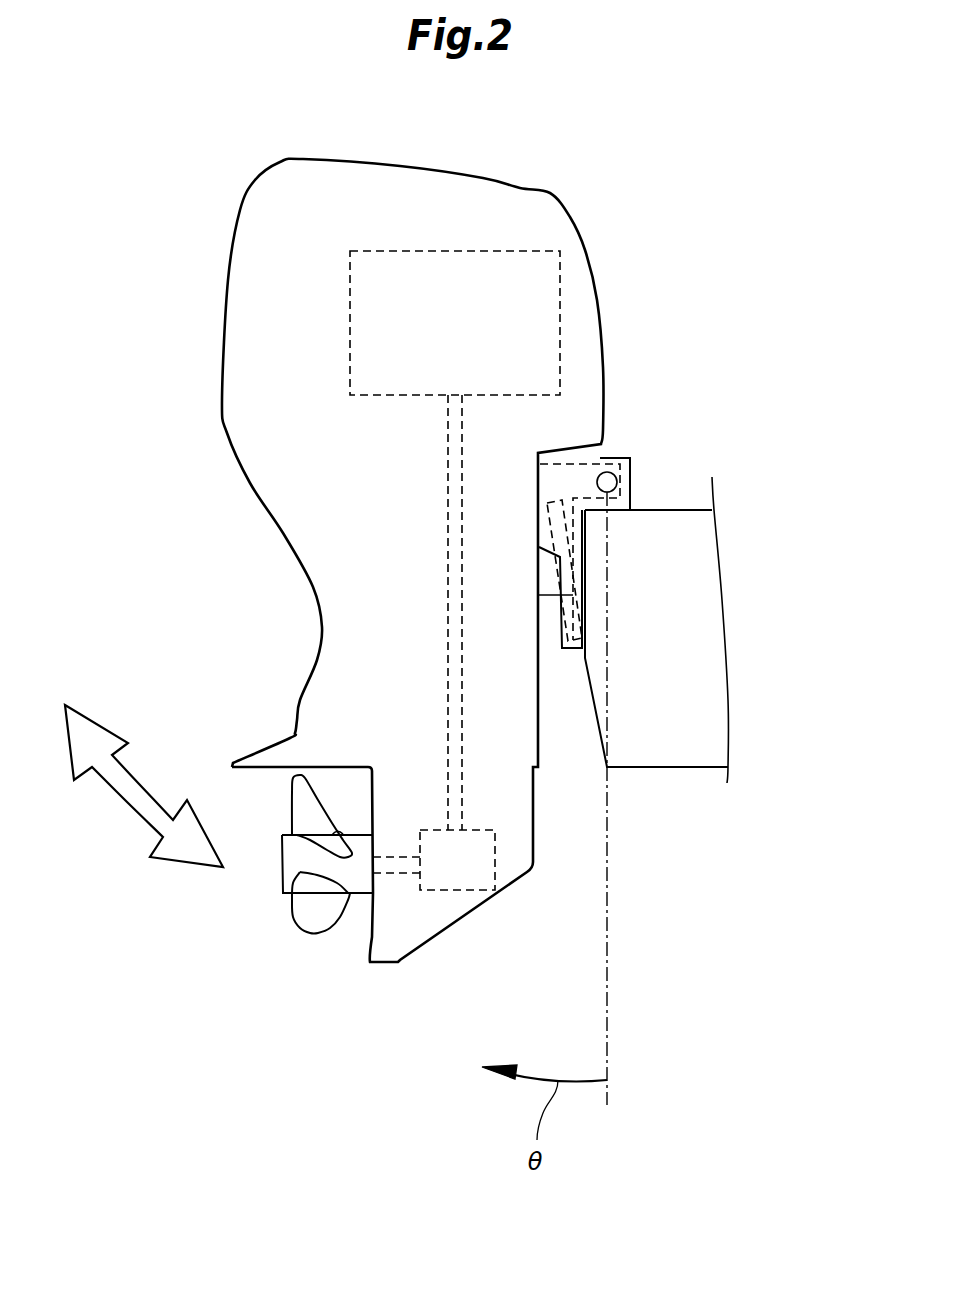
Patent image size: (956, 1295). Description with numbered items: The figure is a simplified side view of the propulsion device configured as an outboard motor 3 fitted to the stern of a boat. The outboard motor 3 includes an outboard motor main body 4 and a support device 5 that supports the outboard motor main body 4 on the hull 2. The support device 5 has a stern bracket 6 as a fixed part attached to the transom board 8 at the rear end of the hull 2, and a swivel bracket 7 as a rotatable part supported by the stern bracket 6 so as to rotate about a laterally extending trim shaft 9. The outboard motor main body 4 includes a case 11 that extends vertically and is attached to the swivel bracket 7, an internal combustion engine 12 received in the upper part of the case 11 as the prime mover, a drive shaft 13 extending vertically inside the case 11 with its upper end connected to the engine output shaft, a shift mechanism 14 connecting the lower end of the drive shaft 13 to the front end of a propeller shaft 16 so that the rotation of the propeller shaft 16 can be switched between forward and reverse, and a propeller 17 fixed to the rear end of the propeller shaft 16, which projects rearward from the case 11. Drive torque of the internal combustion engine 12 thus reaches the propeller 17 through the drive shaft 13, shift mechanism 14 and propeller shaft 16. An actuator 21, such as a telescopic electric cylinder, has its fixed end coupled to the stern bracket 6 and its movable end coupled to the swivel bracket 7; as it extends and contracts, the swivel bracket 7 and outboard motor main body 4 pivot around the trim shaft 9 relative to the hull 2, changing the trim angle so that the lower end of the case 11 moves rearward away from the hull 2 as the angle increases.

The hull 2 is at (667, 753).
The outboard motor 3 is at (639, 197).
The outboard motor main body 4 is at (252, 168).
The support device 5 is at (637, 453).
The stern bracket 6 is at (628, 498).
The swivel bracket 7 is at (558, 468).
The transom board 8 is at (693, 512).
The trim shaft 9 is at (610, 473).
The case 11 is at (330, 168).
The internal combustion engine 12 is at (520, 250).
The drive shaft 13 is at (448, 463).
The shift mechanism 14 is at (465, 882).
The propeller shaft 16 is at (395, 867).
The propeller 17 is at (305, 923).
The actuator 21 is at (575, 613).